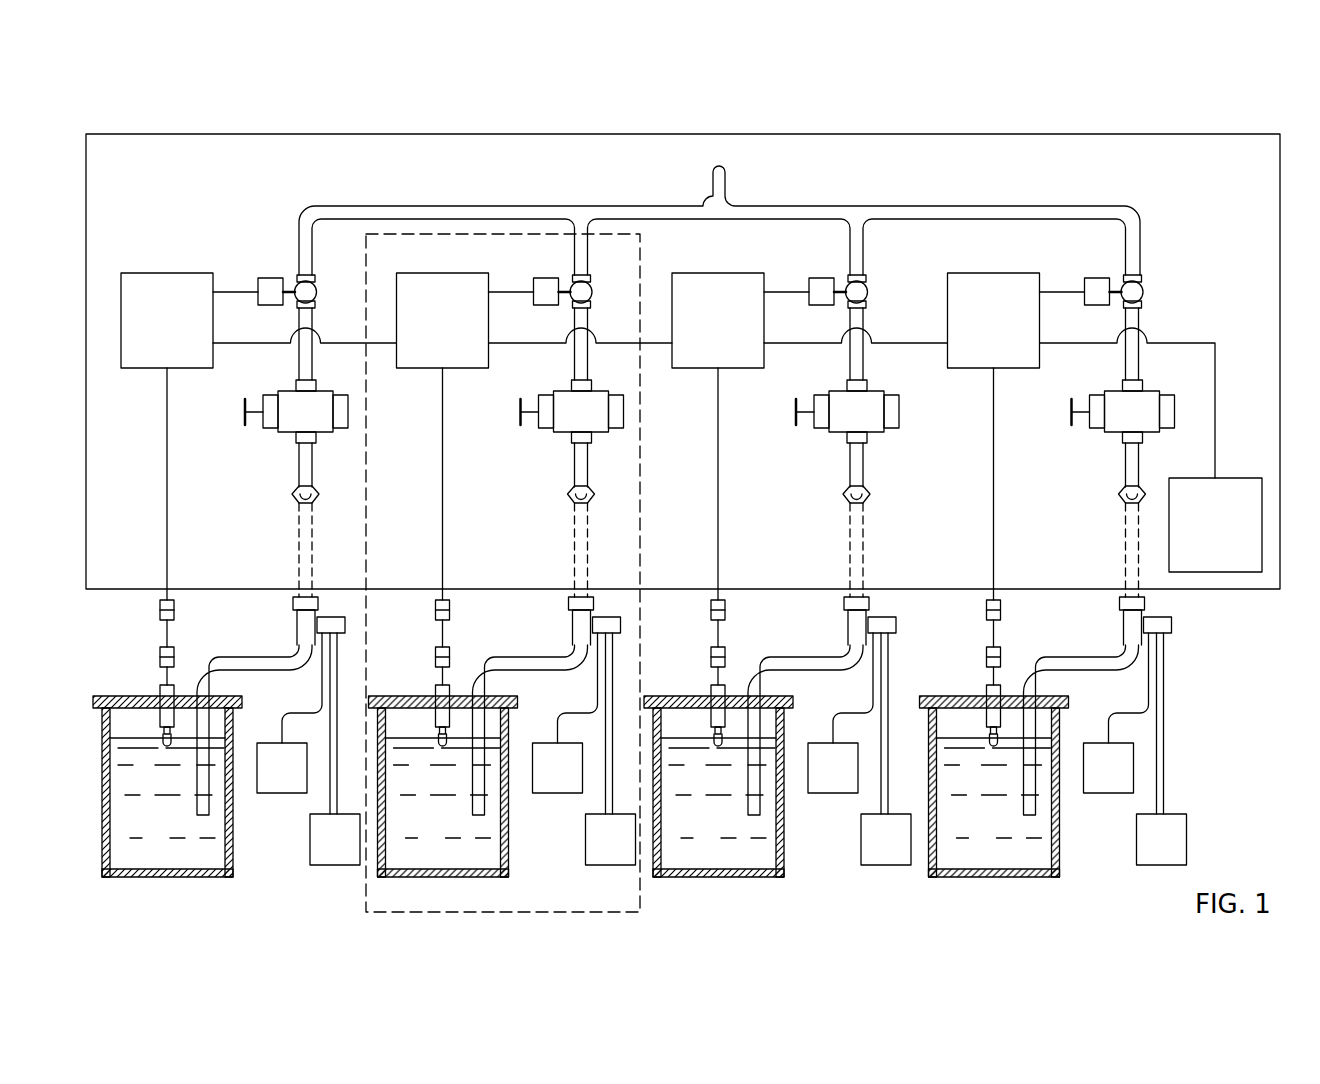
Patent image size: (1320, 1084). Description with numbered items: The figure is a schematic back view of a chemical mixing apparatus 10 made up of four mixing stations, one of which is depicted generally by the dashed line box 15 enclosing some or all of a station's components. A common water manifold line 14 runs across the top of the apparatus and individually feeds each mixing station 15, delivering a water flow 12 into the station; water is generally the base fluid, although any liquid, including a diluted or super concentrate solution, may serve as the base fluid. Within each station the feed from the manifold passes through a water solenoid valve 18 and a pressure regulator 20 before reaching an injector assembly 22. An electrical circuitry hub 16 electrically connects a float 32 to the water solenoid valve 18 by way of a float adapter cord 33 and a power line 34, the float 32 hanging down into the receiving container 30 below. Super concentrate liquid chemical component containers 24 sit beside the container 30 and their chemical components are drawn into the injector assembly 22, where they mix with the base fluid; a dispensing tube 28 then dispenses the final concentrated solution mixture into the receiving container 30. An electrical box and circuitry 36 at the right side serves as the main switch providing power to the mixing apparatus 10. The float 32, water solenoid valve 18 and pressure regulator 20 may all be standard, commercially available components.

The mixing apparatus 10 is at (1116, 116).
The water flow 12 is at (719, 158).
The water manifold line 14 is at (590, 206).
The mixing station 15 is at (362, 232).
The electrical circuitry hub 16 is at (443, 320).
The water solenoid valve 18 is at (540, 273).
The pressure regulator 20 is at (563, 399).
The injector assembly 22 is at (562, 593).
The super concentrate liquid chemical component containers 24 is at (584, 749).
The dispensing tube 28 is at (530, 704).
The receiving container 30 is at (488, 801).
The float 32 is at (413, 703).
The float adapter cord 33 is at (415, 641).
The power line 34 is at (413, 484).
The electrical box and circuitry 36 is at (1232, 538).